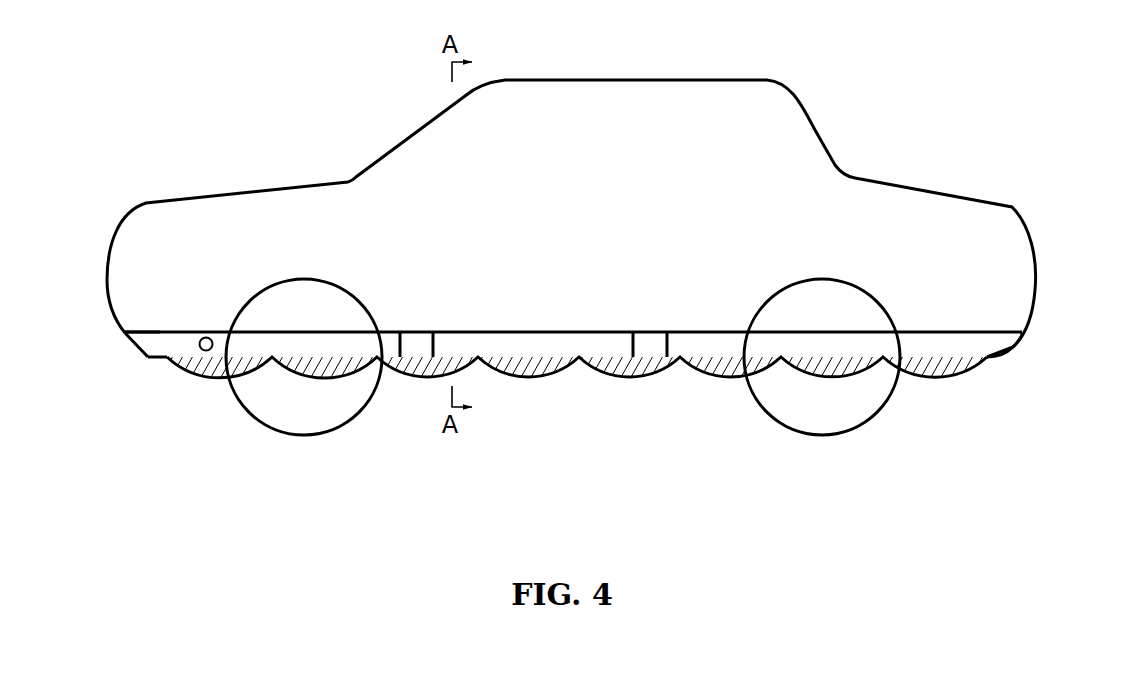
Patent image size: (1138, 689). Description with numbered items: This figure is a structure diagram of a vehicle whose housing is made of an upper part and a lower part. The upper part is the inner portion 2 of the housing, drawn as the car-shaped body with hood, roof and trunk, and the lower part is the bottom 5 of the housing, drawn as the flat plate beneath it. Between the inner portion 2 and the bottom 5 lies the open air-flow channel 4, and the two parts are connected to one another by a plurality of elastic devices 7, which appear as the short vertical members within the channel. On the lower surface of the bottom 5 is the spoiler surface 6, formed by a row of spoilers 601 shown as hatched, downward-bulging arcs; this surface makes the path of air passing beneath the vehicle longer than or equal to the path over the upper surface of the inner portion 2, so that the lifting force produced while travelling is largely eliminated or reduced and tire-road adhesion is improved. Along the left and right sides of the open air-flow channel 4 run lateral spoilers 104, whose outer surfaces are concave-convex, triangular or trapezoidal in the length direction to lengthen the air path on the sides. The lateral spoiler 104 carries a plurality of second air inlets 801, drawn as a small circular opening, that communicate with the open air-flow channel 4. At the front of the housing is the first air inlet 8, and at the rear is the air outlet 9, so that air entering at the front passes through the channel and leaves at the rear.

The inner portion of housing 2 is at (508, 77).
The open air-flow channel 4 is at (531, 346).
The bottom of housing 5 is at (589, 351).
The spoiler surface 6 is at (616, 367).
The spoiler 601 is at (766, 363).
The elastic device 7 is at (654, 345).
The first air inlet 8 is at (132, 354).
The air outlet 9 is at (1025, 349).
The lateral spoiler 104 is at (144, 331).
The second air inlet 801 is at (209, 337).